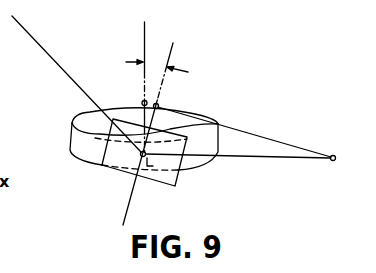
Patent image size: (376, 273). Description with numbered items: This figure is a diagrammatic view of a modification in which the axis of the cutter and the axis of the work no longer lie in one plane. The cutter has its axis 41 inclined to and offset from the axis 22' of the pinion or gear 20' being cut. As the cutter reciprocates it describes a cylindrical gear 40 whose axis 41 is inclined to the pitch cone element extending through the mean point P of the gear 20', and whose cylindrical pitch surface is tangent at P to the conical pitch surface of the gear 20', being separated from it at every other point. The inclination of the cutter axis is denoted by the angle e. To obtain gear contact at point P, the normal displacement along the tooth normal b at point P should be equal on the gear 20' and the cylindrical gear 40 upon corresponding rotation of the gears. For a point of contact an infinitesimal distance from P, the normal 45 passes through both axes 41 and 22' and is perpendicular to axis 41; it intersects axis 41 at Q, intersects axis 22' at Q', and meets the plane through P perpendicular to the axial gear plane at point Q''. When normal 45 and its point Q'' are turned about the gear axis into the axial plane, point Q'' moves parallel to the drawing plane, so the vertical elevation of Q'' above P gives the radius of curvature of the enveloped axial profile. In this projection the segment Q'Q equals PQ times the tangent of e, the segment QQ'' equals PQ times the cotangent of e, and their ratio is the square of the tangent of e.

The pinion or gear 20' is at (134, 149).
The axis of the pinion or gear 22' is at (129, 87).
The cylindrical gear 40 is at (176, 186).
The cutter axis 41 is at (163, 82).
The normal 45 is at (268, 137).
The tooth normal b is at (54, 61).
The inclination of the cutter axis e is at (157, 62).
The mean point P is at (151, 162).
The intersection point of normal with cutter axis Q is at (171, 101).
The intersection point of normal with gear axis Q' is at (132, 93).
The intersection point of normal with plane Q'' is at (322, 176).